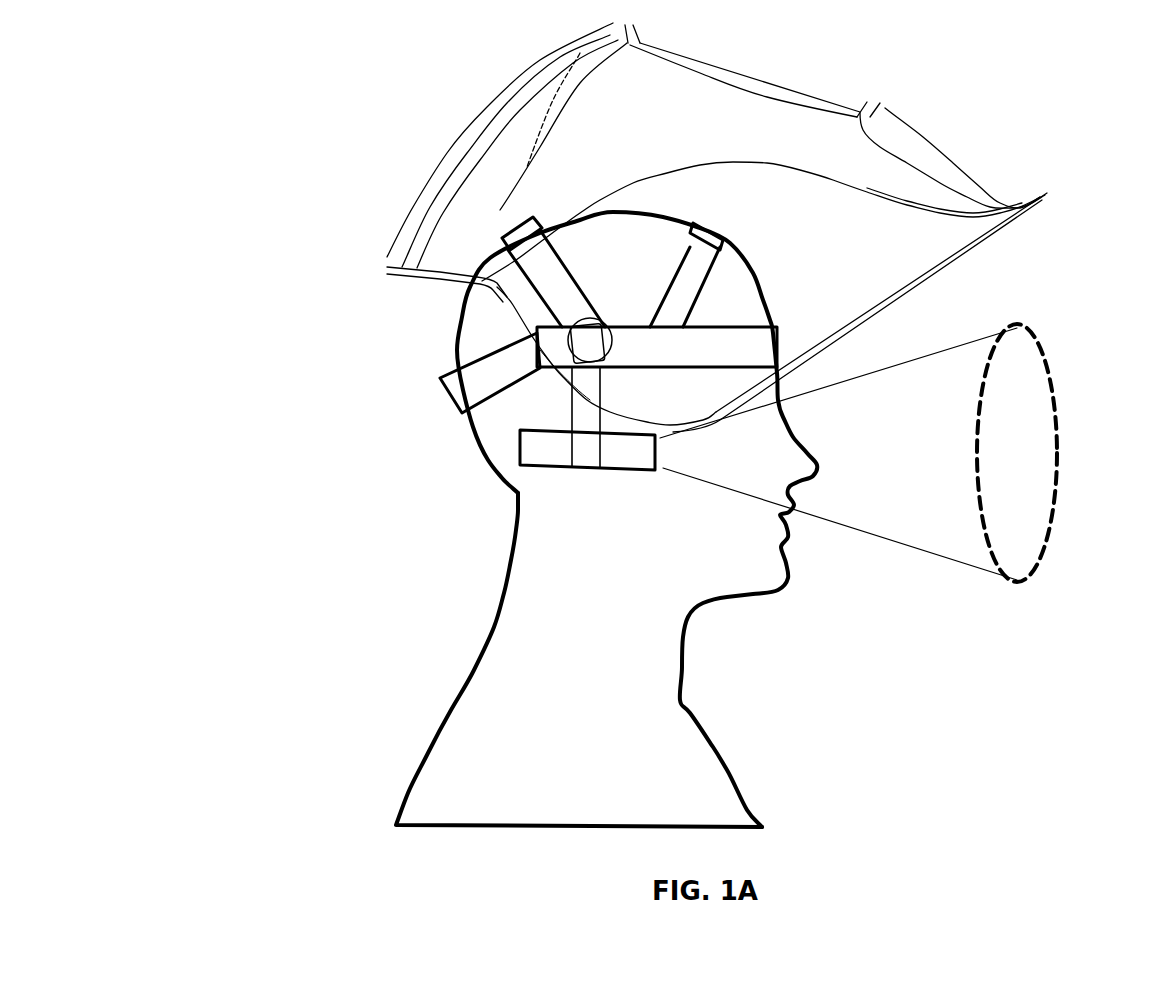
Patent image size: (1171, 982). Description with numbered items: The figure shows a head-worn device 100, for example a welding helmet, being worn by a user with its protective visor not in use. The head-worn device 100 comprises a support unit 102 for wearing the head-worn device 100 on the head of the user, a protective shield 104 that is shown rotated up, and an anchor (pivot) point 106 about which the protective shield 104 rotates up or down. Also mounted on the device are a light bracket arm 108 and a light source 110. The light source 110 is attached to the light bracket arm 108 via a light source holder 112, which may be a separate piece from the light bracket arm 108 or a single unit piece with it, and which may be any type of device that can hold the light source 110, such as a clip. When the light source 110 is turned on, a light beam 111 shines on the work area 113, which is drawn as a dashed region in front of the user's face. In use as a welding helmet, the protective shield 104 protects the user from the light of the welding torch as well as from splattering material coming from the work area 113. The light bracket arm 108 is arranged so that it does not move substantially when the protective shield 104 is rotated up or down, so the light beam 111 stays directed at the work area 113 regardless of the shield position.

The head-worn device 100 is at (249, 144).
The support unit 102 is at (424, 398).
The protective shield 104 is at (996, 127).
The anchor (pivot) point 106 is at (543, 345).
The light bracket arm 108 is at (545, 404).
The light source 110 is at (509, 457).
The light source holder 112 is at (572, 451).
The light beam 111 is at (893, 573).
The work area 113 is at (1073, 557).